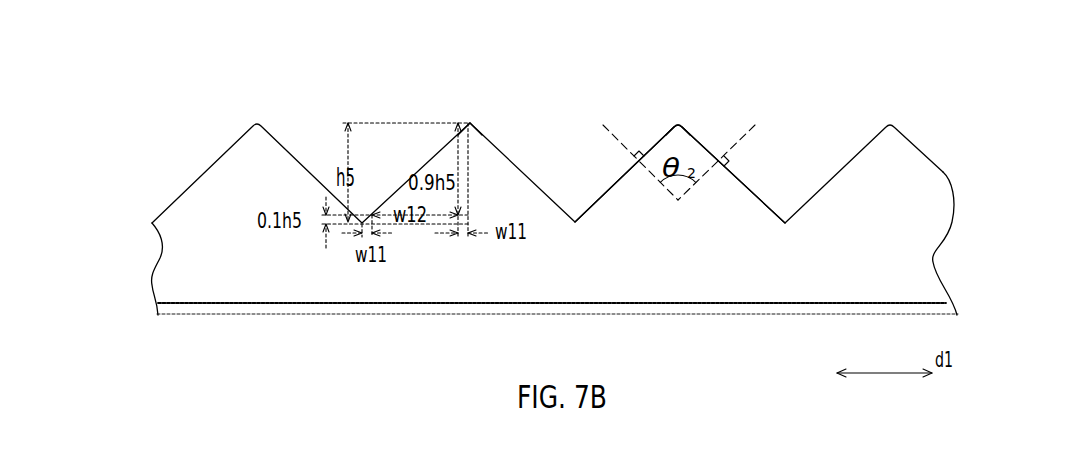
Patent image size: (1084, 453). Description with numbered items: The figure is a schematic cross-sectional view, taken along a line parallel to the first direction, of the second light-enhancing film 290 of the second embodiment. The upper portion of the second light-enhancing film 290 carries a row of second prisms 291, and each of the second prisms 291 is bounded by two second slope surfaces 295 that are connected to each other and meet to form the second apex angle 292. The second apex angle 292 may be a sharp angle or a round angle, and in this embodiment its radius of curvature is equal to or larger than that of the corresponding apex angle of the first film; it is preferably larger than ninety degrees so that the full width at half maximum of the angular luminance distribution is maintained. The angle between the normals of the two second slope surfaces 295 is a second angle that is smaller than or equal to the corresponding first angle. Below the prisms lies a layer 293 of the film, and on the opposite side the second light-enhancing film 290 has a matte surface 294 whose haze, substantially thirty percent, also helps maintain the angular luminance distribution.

The second light-enhancing film 290 is at (80, 83).
The second prisms 291 is at (118, 118).
The second apex angle 292 is at (470, 123).
The base layer 293 is at (118, 232).
The matte surface 294 is at (160, 314).
The second slope surfaces 295 is at (653, 142).